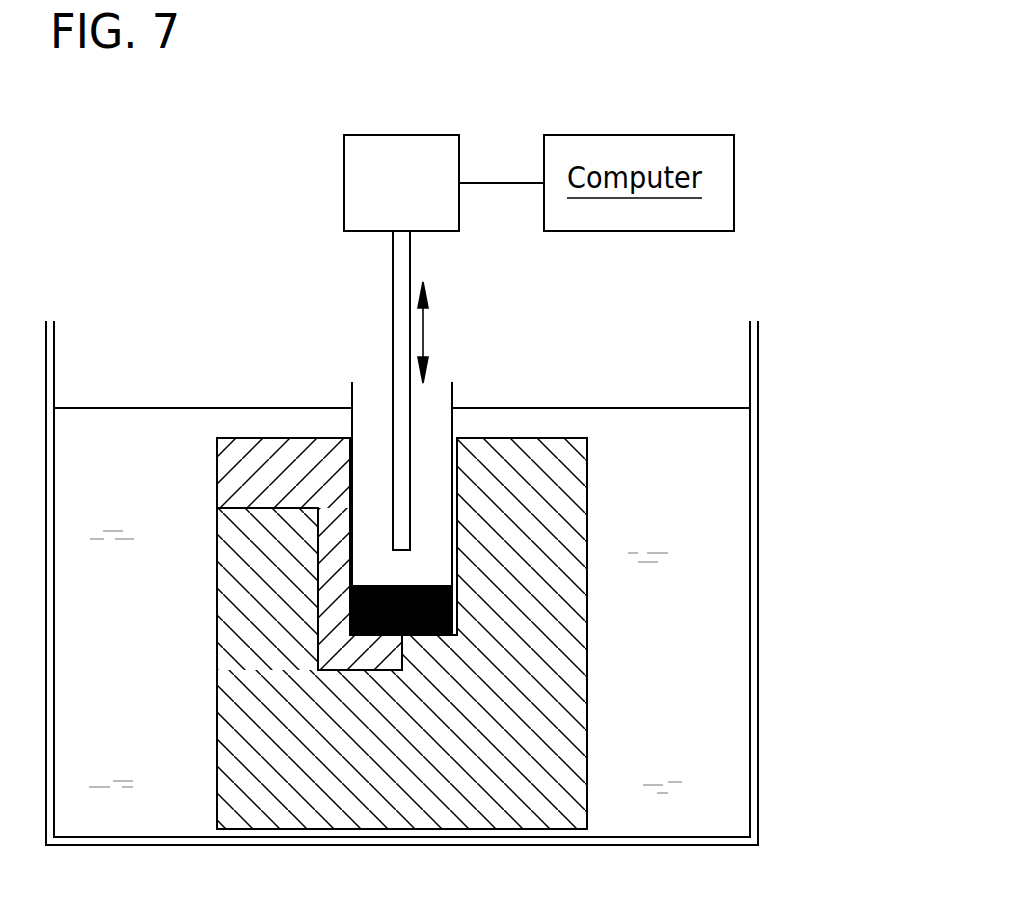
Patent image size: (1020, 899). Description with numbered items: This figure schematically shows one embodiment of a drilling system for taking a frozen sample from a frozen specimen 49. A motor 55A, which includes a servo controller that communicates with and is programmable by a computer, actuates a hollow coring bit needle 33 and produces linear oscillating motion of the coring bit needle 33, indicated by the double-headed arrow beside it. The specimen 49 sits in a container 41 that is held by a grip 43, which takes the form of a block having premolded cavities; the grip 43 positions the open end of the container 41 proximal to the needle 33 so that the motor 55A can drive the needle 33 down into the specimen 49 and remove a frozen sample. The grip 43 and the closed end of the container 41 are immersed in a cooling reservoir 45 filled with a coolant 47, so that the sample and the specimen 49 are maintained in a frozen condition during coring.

The motor 55A is at (431, 196).
The coring bit needle 33 is at (393, 288).
The container 41 is at (452, 395).
The grip 43 is at (269, 452).
The cooling reservoir 45 is at (758, 353).
The coolant 47 is at (673, 430).
The specimen 49 is at (376, 585).